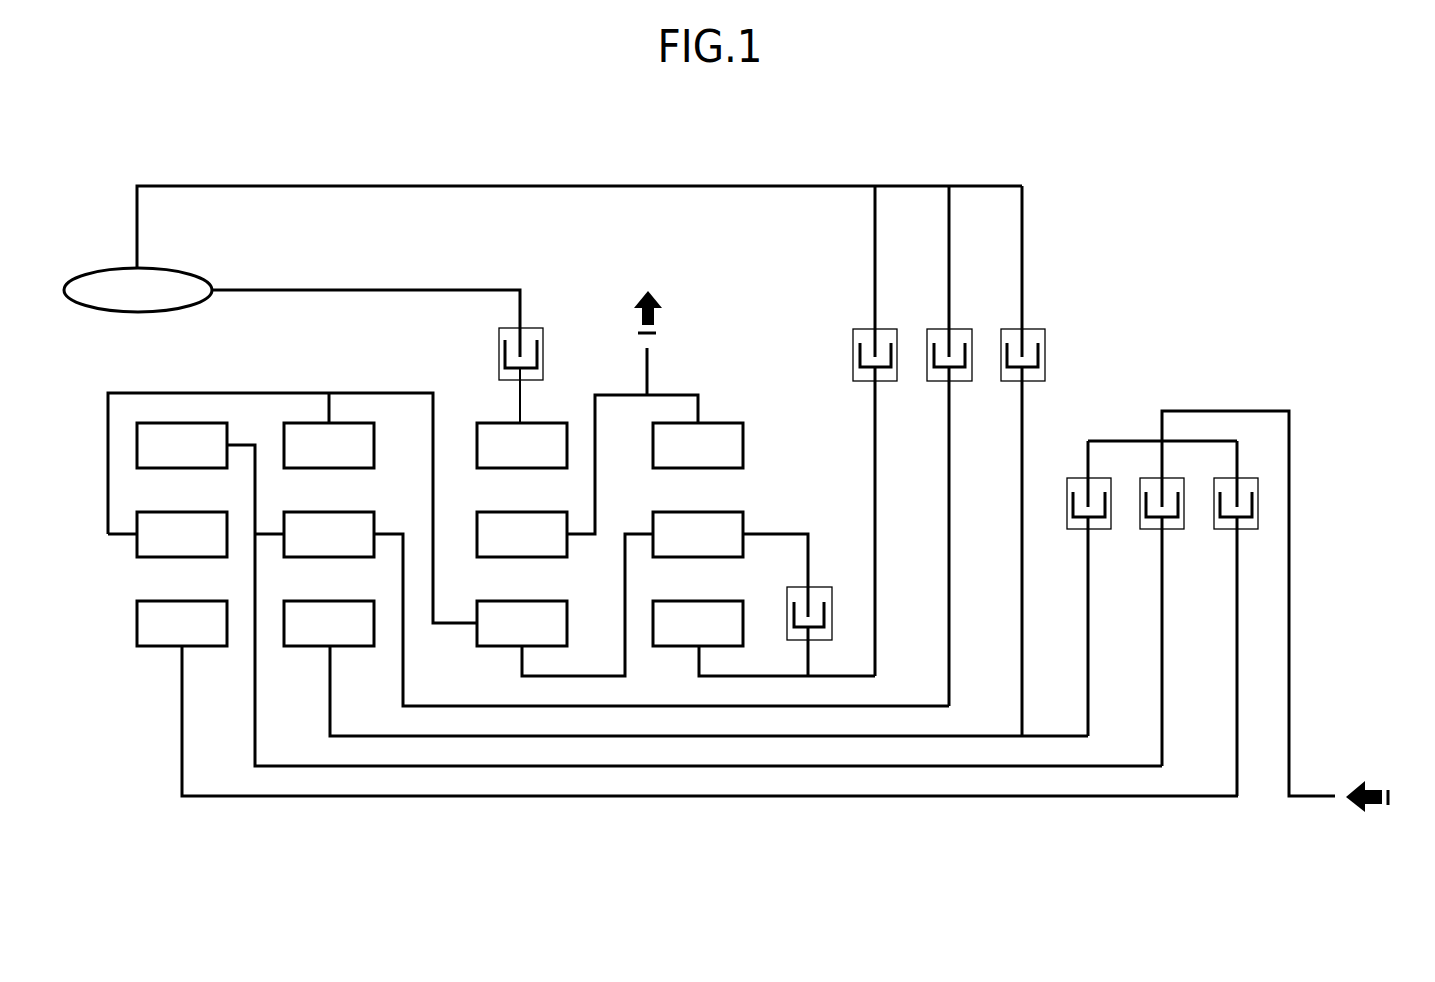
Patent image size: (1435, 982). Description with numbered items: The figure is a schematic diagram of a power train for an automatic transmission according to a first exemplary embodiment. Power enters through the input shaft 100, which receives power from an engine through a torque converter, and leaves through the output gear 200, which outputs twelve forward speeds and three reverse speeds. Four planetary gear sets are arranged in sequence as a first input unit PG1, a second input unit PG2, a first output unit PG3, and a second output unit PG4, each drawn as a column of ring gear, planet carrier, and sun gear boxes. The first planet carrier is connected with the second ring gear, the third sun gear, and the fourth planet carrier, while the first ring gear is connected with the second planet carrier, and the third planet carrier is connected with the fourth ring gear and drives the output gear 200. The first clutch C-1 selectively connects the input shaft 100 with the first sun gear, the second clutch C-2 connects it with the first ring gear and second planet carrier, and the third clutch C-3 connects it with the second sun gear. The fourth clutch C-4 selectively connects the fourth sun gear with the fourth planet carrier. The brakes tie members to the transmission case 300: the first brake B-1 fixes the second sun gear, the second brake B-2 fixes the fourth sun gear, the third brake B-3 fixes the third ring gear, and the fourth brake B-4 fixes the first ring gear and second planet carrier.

The input shaft 100 is at (1289, 559).
The output gear 200 is at (647, 372).
The transmission case 300 is at (83, 271).
The first input unit PG1 is at (157, 656).
The second input unit PG2 is at (305, 657).
The first output unit PG3 is at (495, 659).
The second output unit PG4 is at (673, 659).
The first brake B-1 is at (1015, 461).
The second brake B-2 is at (867, 431).
The third brake B-3 is at (514, 342).
The fourth brake B-4 is at (942, 446).
The first clutch C-1 is at (1229, 618).
The second clutch C-2 is at (1155, 603).
The third clutch C-3 is at (1081, 588).
The fourth clutch C-4 is at (802, 602).